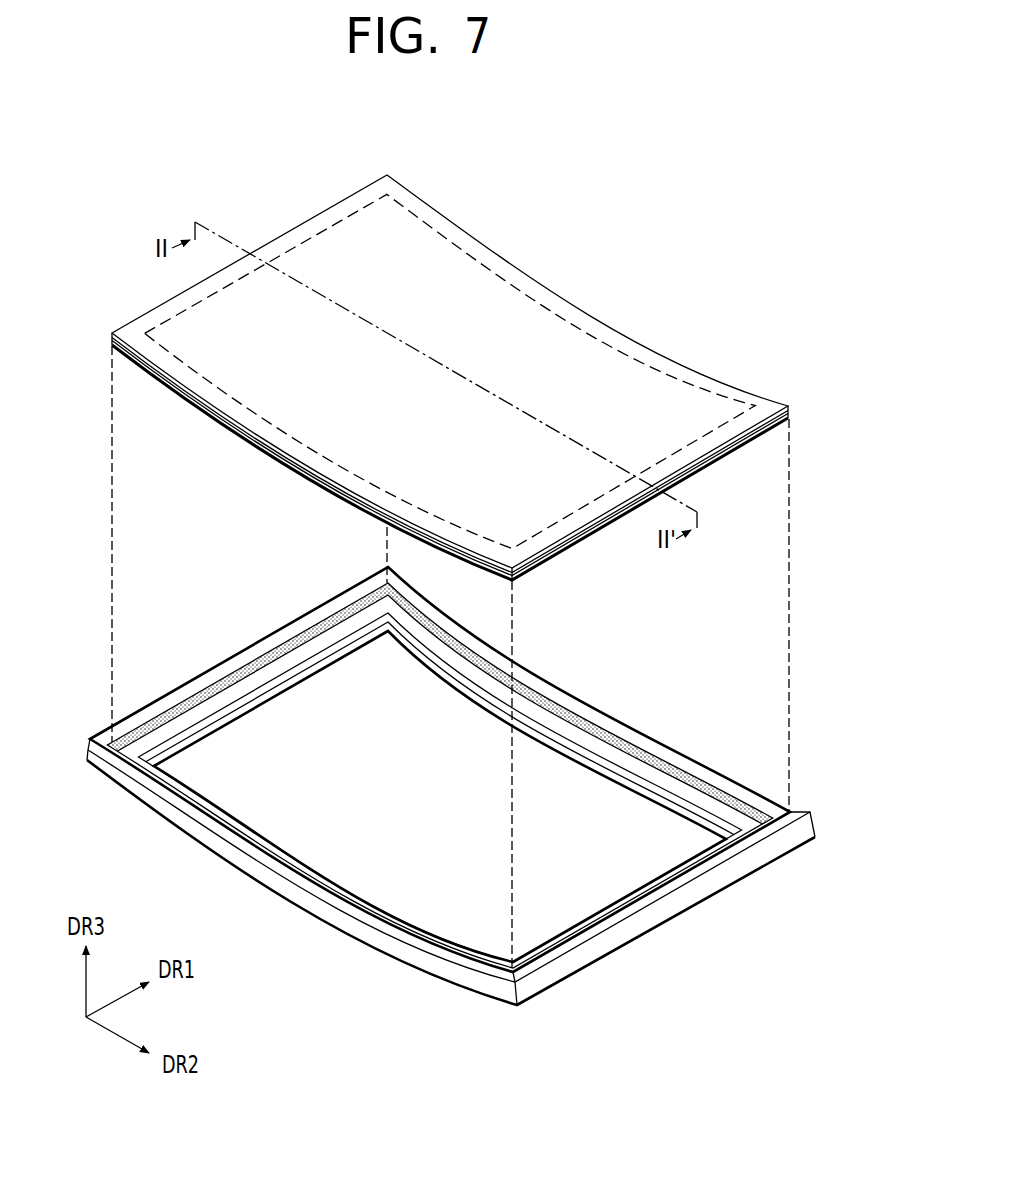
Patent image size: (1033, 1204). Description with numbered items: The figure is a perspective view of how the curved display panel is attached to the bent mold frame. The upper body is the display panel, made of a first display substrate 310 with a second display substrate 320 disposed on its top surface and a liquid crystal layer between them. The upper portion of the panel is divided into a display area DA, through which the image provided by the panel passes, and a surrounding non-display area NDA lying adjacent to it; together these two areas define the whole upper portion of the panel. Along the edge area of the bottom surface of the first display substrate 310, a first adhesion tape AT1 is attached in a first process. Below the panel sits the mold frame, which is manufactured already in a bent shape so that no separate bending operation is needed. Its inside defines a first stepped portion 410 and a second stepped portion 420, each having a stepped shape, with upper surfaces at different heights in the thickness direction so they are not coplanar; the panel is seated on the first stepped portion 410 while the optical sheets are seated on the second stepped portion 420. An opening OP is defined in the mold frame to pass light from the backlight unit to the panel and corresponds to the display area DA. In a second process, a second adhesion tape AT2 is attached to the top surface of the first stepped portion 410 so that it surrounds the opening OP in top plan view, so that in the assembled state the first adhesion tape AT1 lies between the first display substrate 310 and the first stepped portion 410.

The first display substrate 310 is at (583, 537).
The second display substrate 320 is at (698, 468).
The first stepped portion 410 is at (553, 727).
The second stepped portion 420 is at (577, 753).
The first adhesion tape AT1 is at (545, 557).
The second adhesion tape AT2 is at (643, 767).
The display area DA is at (518, 307).
The non-display area NDA is at (575, 312).
The opening OP is at (658, 826).